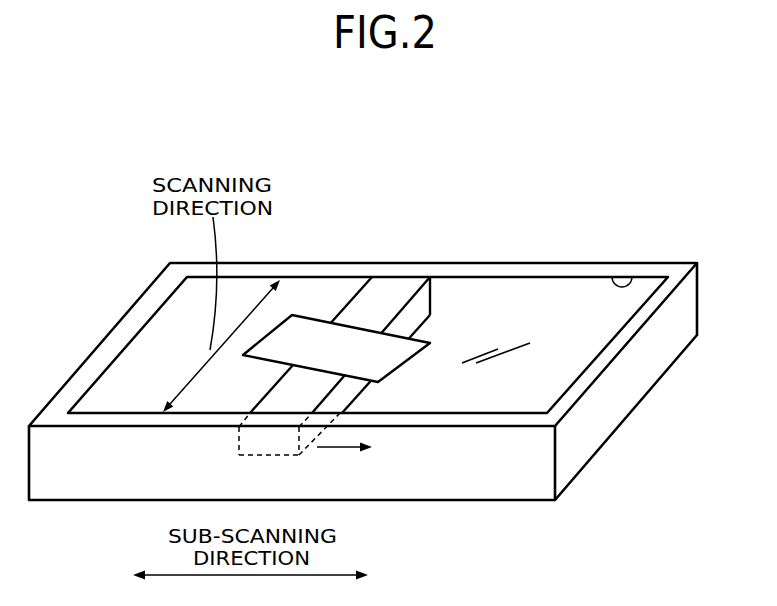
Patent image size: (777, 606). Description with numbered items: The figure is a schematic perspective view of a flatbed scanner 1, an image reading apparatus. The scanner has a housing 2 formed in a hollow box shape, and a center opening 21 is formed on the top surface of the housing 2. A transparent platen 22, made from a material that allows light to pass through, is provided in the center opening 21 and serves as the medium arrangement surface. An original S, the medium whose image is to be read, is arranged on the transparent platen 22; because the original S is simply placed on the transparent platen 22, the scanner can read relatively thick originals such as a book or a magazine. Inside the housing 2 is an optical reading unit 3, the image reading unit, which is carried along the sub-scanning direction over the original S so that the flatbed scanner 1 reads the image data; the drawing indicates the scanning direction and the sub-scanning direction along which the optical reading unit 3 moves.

The flatbed scanner 1 is at (234, 134).
The housing 2 is at (575, 258).
The center opening 21 is at (634, 277).
The transparent platen 22 is at (558, 357).
The optical reading unit 3 is at (384, 284).
The original S is at (318, 340).